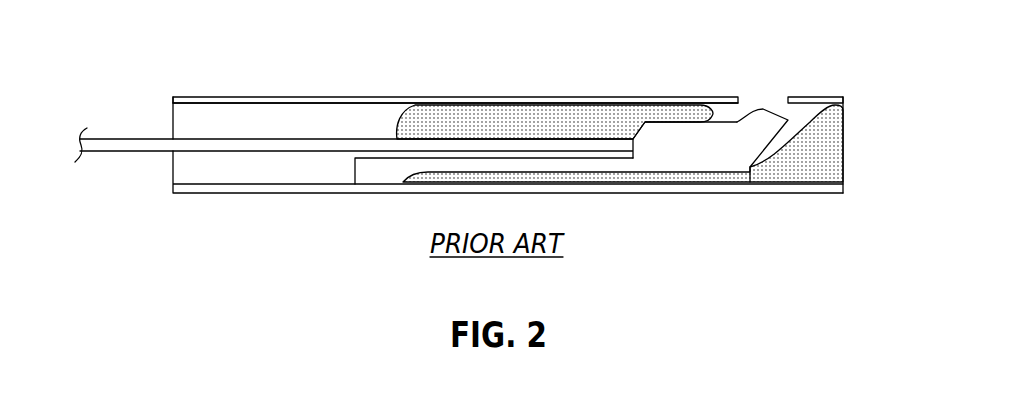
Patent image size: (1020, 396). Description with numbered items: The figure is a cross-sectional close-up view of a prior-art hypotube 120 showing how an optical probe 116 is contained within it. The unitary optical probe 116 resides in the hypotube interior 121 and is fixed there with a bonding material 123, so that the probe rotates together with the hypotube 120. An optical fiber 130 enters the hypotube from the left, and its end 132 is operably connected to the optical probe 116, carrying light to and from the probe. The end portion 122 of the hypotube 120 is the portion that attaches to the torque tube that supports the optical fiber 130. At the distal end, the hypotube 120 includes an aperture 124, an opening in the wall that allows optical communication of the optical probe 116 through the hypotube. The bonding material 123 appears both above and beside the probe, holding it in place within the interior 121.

The optical probe 116 is at (717, 147).
The hypotube 120 is at (360, 97).
The hypotube interior 121 is at (287, 120).
The end portion of hypotube 122 is at (173, 172).
The bonding material 123 is at (578, 117).
The aperture 124 is at (775, 103).
The optical fiber 130 is at (143, 139).
The end of optical fiber 132 is at (629, 141).